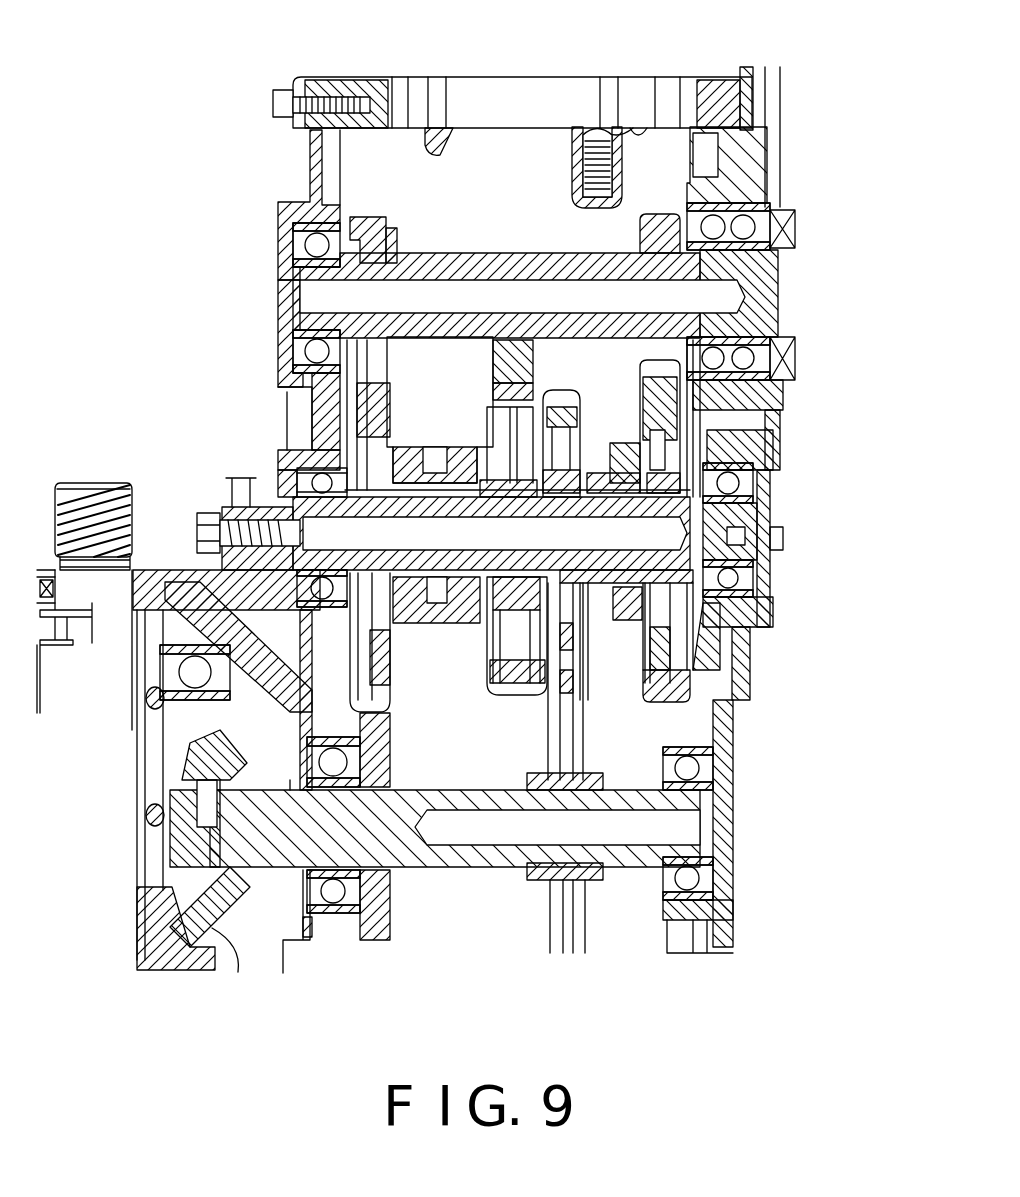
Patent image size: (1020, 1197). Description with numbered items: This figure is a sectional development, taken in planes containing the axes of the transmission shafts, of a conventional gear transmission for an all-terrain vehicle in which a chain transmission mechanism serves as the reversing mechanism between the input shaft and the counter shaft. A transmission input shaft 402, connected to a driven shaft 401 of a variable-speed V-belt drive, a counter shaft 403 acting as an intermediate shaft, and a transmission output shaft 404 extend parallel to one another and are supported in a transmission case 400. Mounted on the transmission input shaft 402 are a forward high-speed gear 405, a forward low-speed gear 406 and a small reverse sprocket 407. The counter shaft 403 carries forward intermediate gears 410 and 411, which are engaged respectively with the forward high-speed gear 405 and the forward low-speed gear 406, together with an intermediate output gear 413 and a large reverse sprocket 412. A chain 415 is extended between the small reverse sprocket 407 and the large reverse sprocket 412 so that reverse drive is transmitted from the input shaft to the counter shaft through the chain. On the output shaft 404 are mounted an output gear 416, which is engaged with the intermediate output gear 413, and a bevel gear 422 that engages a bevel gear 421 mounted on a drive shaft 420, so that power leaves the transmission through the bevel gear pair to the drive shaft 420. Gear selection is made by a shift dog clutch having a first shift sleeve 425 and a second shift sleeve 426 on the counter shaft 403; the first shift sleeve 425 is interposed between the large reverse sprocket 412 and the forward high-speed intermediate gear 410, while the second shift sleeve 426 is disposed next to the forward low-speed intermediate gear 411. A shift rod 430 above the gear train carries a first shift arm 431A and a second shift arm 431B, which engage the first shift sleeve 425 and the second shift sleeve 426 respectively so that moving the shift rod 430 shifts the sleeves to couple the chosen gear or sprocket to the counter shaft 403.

The transmission case 400 is at (315, 165).
The driven shaft 401 is at (783, 316).
The transmission input shaft 402 is at (320, 300).
The counter shaft 403 is at (283, 497).
The transmission output shaft 404 is at (453, 870).
The forward high-speed gear 405 is at (538, 197).
The forward low-speed gear 406 is at (660, 222).
The small reverse sprocket 407 is at (388, 232).
The forward high-speed intermediate gear 410 is at (520, 652).
The forward low-speed intermediate gear 411 is at (698, 692).
The large reverse sprocket 412 is at (370, 395).
The intermediate output gear 413 is at (558, 393).
The chain 415 is at (365, 217).
The output gear 416 is at (570, 920).
The drive shaft 420 is at (95, 500).
The bevel gear 421 is at (215, 940).
The bevel gear 422 is at (185, 752).
The first shift sleeve 425 is at (413, 623).
The second shift sleeve 426 is at (617, 620).
The shift rod 430 is at (504, 92).
The first shift arm 431A is at (450, 148).
The second shift arm 431B is at (662, 130).